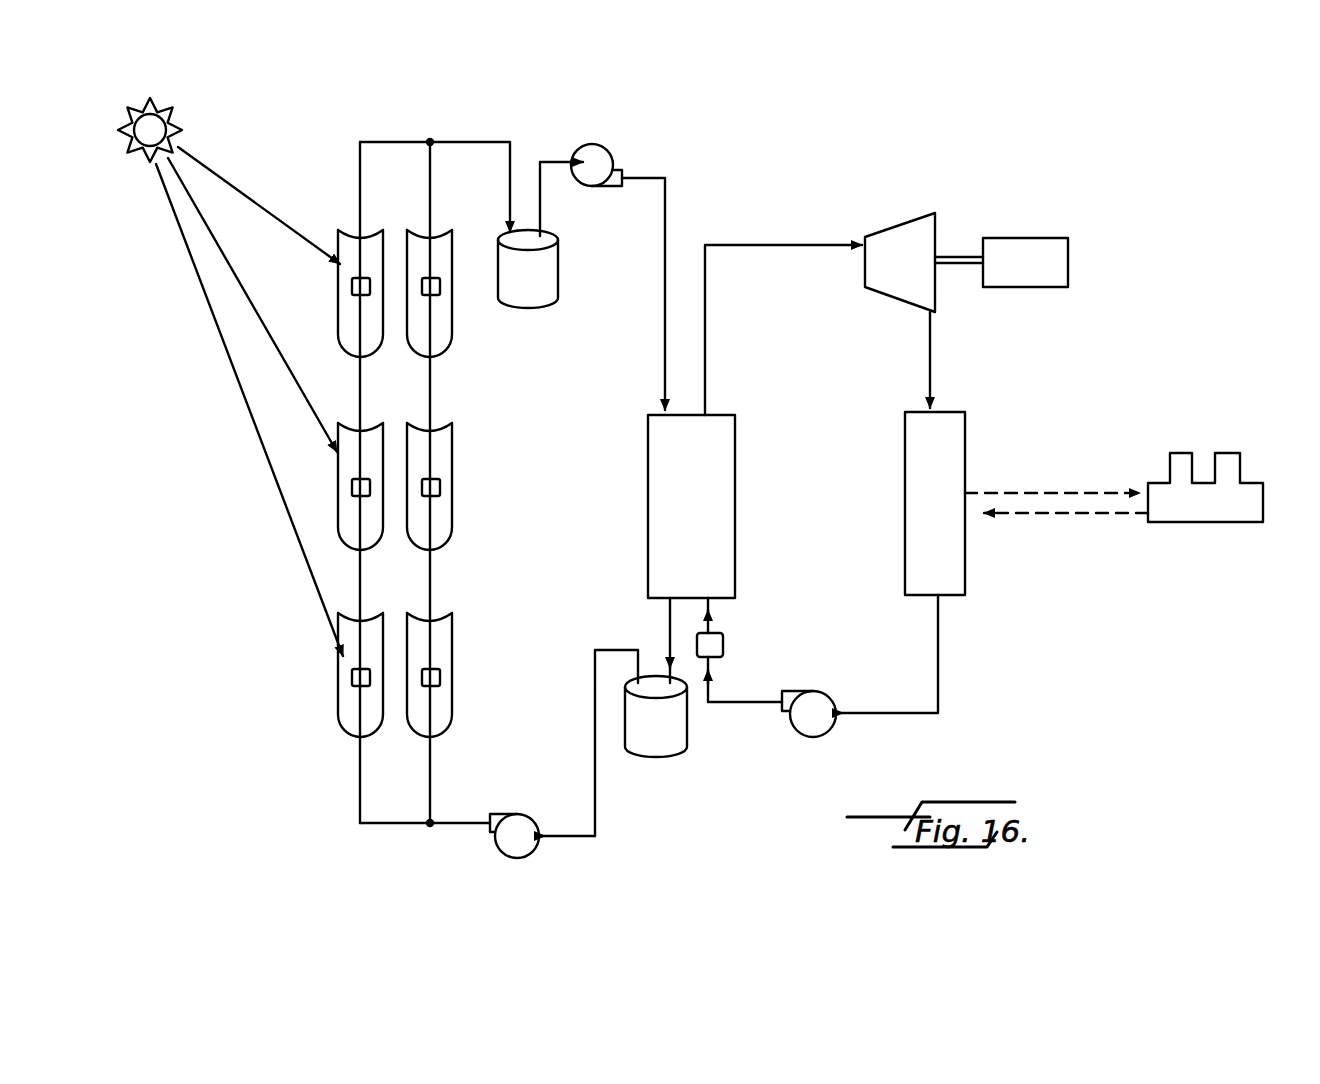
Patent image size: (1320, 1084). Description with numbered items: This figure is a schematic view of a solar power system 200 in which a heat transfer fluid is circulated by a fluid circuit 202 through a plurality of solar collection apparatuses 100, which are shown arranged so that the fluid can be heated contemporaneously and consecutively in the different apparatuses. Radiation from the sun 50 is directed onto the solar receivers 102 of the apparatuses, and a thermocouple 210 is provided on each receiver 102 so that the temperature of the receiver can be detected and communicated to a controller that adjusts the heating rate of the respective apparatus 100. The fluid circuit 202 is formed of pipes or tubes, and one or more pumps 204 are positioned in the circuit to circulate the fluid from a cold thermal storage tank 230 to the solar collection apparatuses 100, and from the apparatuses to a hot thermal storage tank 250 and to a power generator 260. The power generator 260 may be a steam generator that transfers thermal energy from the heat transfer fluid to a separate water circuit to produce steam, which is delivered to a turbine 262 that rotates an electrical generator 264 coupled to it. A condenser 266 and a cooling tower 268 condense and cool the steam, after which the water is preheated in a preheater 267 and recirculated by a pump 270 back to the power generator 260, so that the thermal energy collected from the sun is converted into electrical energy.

The sun 50 is at (172, 118).
The solar collection apparatus 100 is at (337, 238).
The solar receiver 102 is at (424, 254).
The solar power system 200 is at (1042, 172).
The fluid circuit 202 is at (470, 136).
The pump 204 is at (600, 152).
The thermocouple 210 is at (350, 287).
The cold thermal storage tank 230 is at (655, 750).
The hot thermal storage tank 250 is at (540, 300).
The power generator 260 is at (722, 472).
The turbine 262 is at (903, 235).
The electrical generator 264 is at (1032, 284).
The condenser 266 is at (953, 453).
The preheater 267 is at (716, 646).
The cooling tower 268 is at (1200, 516).
The pump 270 is at (815, 734).